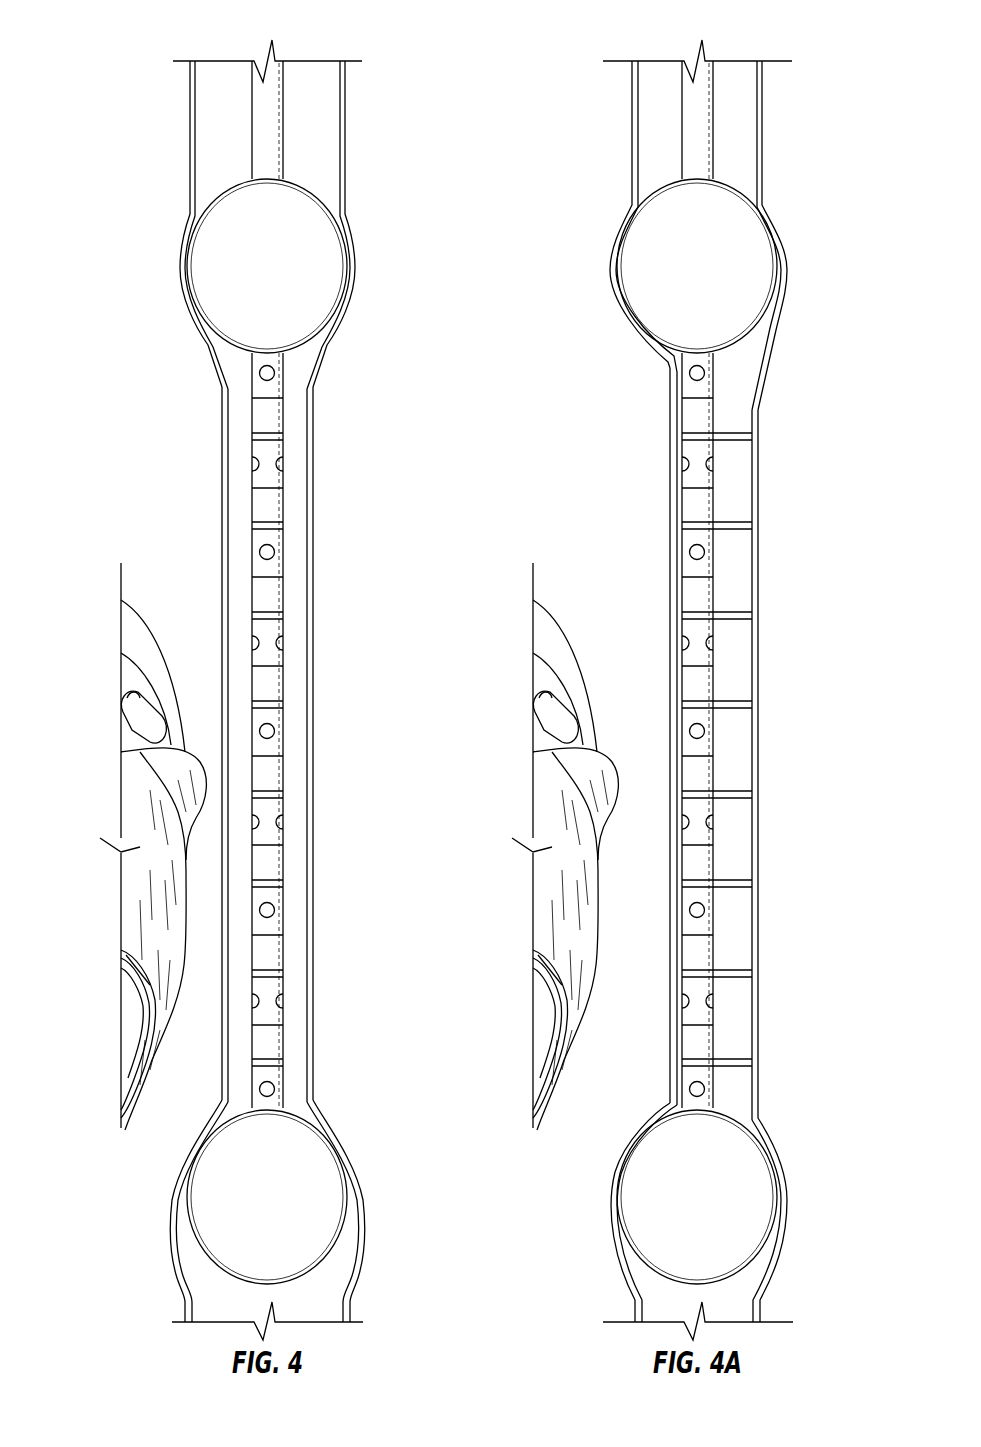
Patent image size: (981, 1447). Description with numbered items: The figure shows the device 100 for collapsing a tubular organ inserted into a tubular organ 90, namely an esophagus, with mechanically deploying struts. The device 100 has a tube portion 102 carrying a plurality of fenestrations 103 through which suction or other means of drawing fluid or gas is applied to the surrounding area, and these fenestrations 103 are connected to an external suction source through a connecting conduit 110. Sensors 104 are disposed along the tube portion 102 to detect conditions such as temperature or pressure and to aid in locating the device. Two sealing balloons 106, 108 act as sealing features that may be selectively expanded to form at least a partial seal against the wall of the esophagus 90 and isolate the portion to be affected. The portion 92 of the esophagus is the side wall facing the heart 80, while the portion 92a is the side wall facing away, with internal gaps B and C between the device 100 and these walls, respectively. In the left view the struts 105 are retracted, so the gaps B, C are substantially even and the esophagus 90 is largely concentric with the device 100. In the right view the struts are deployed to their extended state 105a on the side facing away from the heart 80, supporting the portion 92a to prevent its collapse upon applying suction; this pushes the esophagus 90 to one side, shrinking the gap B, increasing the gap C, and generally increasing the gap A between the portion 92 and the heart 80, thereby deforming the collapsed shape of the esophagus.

In FIG. 4, the device 100 is at (217, 44).
In FIG. 4A, the device 100 is at (647, 44).
In FIG. 4, the tubular organ 90 is at (191, 148).
In FIG. 4A, the tubular organ 90 is at (633, 146).
In FIG. 4, the portion 92 is at (222, 645).
In FIG. 4A, the portion 92 is at (670, 645).
In FIG. 4, the portion 92a is at (313, 840).
In FIG. 4A, the portion 92a is at (758, 840).
In FIG. 4, the sealing balloon 108 is at (348, 275).
In FIG. 4A, the sealing balloon 108 is at (777, 270).
In FIG. 4, the sealing balloon 106 is at (216, 1126).
In FIG. 4A, the sealing balloon 106 is at (646, 1126).
In FIG. 4, the connecting conduit 110 is at (283, 88).
In FIG. 4A, the connecting conduit 110 is at (713, 88).
In FIG. 4, the tube portion 102 is at (283, 772).
In FIG. 4A, the tube portion 102 is at (713, 765).
In FIG. 4, the fenestrations 103 is at (274, 375).
In FIG. 4A, the fenestrations 103 is at (704, 375).
In FIG. 4, the sensors 104 is at (258, 418).
In FIG. 4A, the sensors 104 is at (688, 418).
In FIG. 4, the struts 105 is at (285, 615).
In FIG. 4A, the struts in extended state 105a is at (752, 613).
In FIG. 4, the heart 80 is at (160, 935).
In FIG. 4A, the heart 80 is at (575, 846).
In FIG. 4, the gap A is at (209, 897).
In FIG. 4A, the gap A is at (631, 880).
In FIG. 4, the gap B is at (237, 692).
In FIG. 4A, the gap B is at (677, 692).
In FIG. 4, the gap C is at (297, 683).
In FIG. 4A, the gap C is at (735, 920).